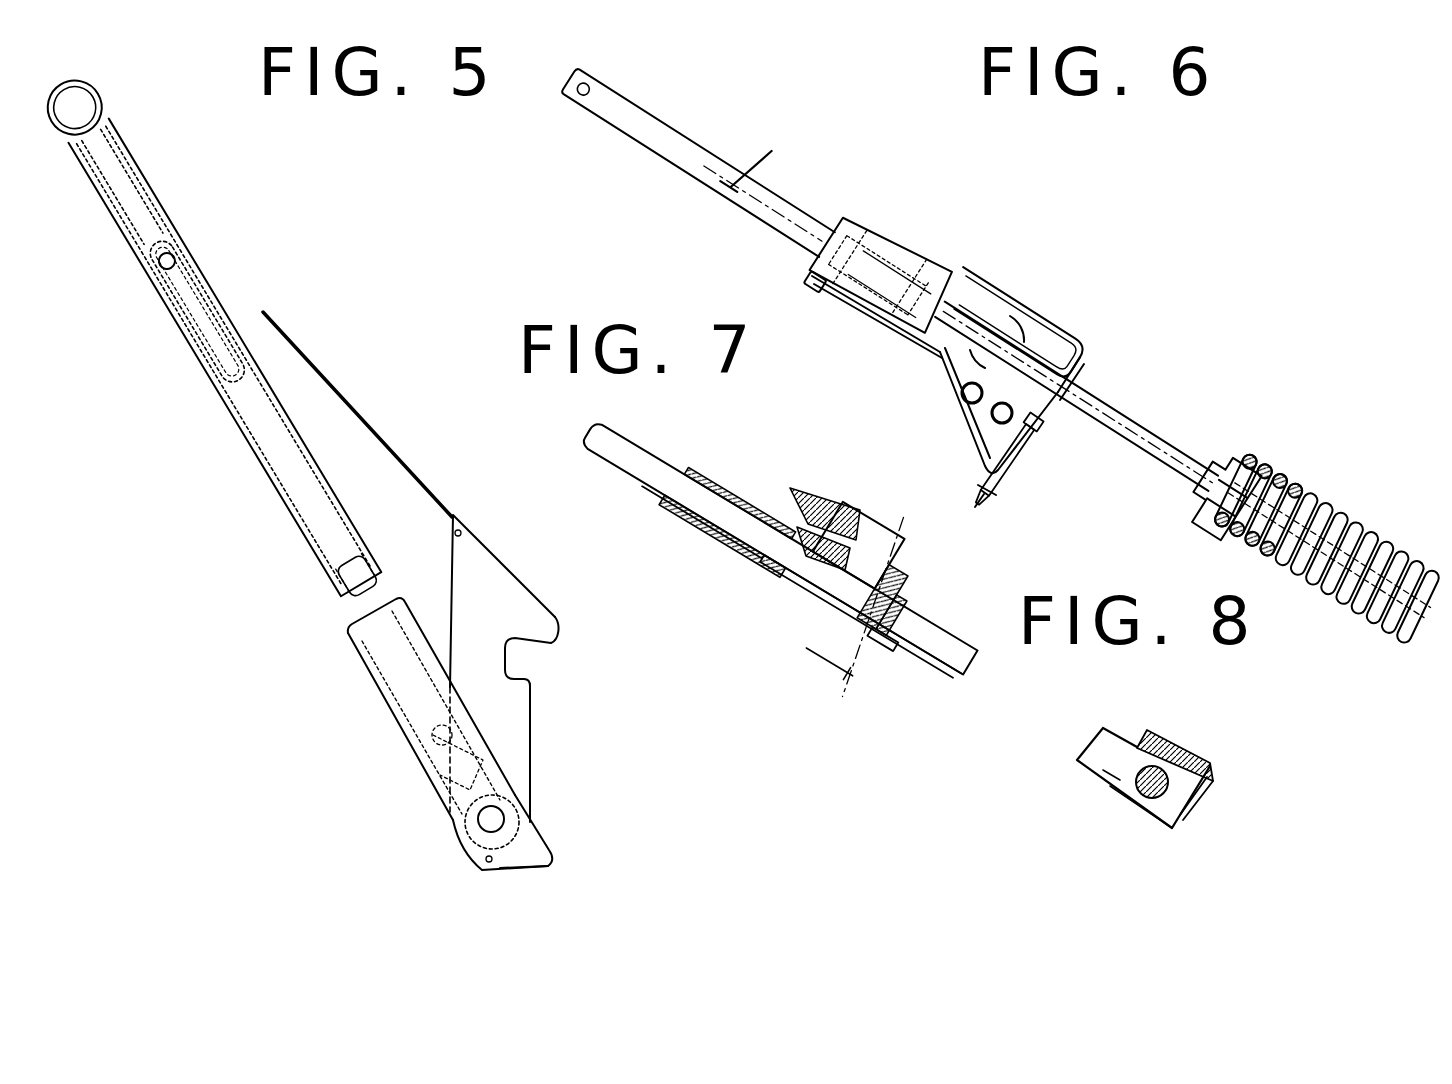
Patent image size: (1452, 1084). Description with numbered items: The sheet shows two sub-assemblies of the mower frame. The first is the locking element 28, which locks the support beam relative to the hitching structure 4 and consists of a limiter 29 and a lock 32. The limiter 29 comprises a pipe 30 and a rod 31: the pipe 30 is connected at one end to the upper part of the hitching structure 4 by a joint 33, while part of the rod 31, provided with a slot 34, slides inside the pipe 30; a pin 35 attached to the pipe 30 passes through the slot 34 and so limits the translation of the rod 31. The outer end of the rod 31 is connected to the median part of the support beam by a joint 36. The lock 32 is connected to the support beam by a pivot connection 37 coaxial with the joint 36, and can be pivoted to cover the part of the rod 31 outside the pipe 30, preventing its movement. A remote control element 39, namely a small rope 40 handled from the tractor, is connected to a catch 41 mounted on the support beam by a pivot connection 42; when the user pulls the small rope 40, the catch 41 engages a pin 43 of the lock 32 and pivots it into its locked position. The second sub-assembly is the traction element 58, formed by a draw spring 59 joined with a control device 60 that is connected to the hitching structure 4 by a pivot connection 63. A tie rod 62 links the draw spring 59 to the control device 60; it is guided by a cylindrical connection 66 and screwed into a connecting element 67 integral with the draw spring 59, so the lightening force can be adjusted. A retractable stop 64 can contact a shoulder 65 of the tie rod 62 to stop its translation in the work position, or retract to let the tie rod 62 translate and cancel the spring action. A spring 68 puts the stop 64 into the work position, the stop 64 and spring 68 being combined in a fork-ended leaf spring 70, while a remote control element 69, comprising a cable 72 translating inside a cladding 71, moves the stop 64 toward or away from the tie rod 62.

In FIG. 7, the hitching structure 4 is at (838, 498).
In FIG. 5, the locking element 28 is at (272, 508).
In FIG. 5, the limiter 29 is at (336, 603).
In FIG. 5, the pipe 30 is at (251, 450).
In FIG. 5, the rod 31 is at (413, 695).
In FIG. 5, the lock 32 is at (406, 607).
In FIG. 5, the joint 33 is at (97, 98).
In FIG. 5, the slot 34 is at (192, 360).
In FIG. 5, the pin 35 is at (174, 258).
In FIG. 5, the joint 36 is at (487, 815).
In FIG. 5, the pivot connection 37 is at (505, 862).
In FIG. 5, the remote control element 39 is at (342, 380).
In FIG. 5, the small rope 40 is at (290, 338).
In FIG. 5, the catch 41 is at (530, 620).
In FIG. 5, the pivot connection 42 is at (506, 815).
In FIG. 5, the pin 43 is at (427, 737).
In FIG. 6, the traction element 58 is at (974, 262).
In FIG. 6, the draw spring 59 is at (1340, 513).
In FIG. 6, the control device 60 is at (847, 222).
In FIG. 7, the control device 60 is at (708, 470).
In FIG. 8, the control device 60 is at (1213, 765).
In FIG. 6, the tie rod 62 is at (1150, 427).
In FIG. 7, the tie rod 62 is at (953, 650).
In FIG. 8, the tie rod 62 is at (1188, 818).
In FIG. 6, the pivot connection 63 is at (1005, 315).
In FIG. 7, the pivot connection 63 is at (795, 497).
In FIG. 6, the retractable stop 64 is at (1090, 407).
In FIG. 7, the retractable stop 64 is at (887, 652).
In FIG. 8, the retractable stop 64 is at (1097, 757).
In FIG. 6, the shoulder 65 is at (1077, 358).
In FIG. 7, the shoulder 65 is at (897, 560).
In FIG. 6, the cylindrical connection 66 is at (912, 268).
In FIG. 7, the cylindrical connection 66 is at (733, 555).
In FIG. 6, the connecting element 67 is at (1237, 463).
In FIG. 6, the spring 68 is at (887, 332).
In FIG. 7, the spring 68 is at (800, 593).
In FIG. 6, the remote control element 69 is at (1008, 494).
In FIG. 6, the leaf spring 70 is at (917, 345).
In FIG. 7, the leaf spring 70 is at (810, 600).
In FIG. 8, the leaf spring 70 is at (1104, 772).
In FIG. 6, the cladding 71 is at (992, 500).
In FIG. 6, the cable 72 is at (1027, 433).